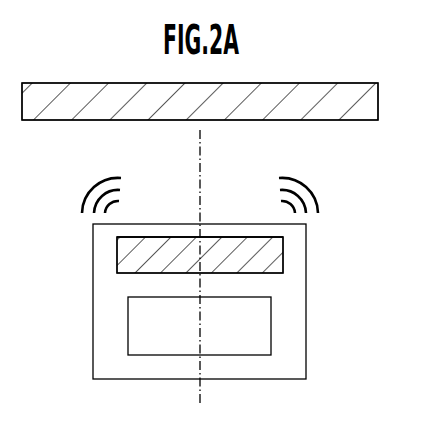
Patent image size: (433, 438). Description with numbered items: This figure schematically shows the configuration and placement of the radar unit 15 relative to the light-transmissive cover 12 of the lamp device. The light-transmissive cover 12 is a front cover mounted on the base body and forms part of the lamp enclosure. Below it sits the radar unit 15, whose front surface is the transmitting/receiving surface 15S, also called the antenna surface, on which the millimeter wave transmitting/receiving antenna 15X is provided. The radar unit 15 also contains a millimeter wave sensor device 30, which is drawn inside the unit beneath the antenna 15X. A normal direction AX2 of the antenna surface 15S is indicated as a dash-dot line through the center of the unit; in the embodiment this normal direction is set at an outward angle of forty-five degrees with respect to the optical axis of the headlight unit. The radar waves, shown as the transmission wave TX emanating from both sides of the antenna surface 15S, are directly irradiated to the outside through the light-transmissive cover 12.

The light-transmissive cover 12 is at (355, 121).
The radar unit 15 is at (306, 288).
The transmitting/receiving antenna 15X is at (283, 250).
The transmitting/receiving surface 15S is at (238, 237).
The millimeter wave sensor device 30 is at (271, 320).
The normal direction AX2 is at (174, 266).
The transmission wave TX is at (198, 191).